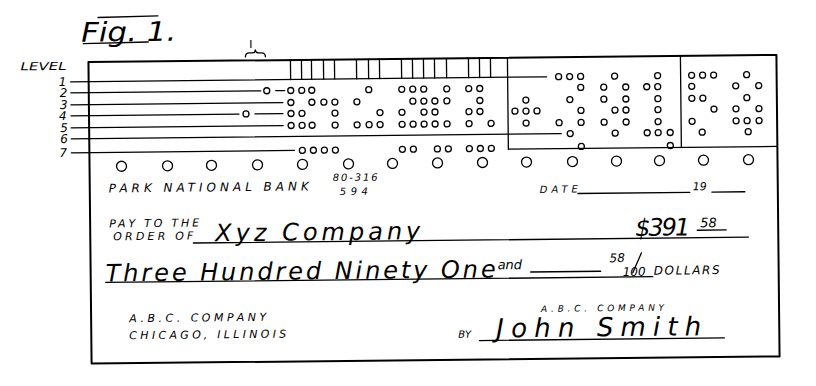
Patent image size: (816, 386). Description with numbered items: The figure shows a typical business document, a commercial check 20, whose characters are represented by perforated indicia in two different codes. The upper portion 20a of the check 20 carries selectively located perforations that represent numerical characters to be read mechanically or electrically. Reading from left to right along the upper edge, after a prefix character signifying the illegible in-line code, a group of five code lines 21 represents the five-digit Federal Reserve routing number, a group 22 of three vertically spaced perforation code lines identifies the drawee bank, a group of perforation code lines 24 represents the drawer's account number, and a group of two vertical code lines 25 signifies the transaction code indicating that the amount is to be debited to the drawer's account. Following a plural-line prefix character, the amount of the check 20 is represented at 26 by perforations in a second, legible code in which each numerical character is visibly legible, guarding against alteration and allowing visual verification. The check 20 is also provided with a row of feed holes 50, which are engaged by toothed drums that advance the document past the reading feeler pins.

The commercial check 20 is at (80, 261).
The upper portion of the check 20a is at (257, 88).
The group of five code lines 21 is at (343, 46).
The group of three perforation code lines 22 is at (389, 46).
The group of perforation code lines 24 is at (454, 46).
The group of two vertical code lines 25 is at (499, 46).
The amount perforations in second code 26 is at (762, 38).
The row of feed holes 50 is at (438, 168).